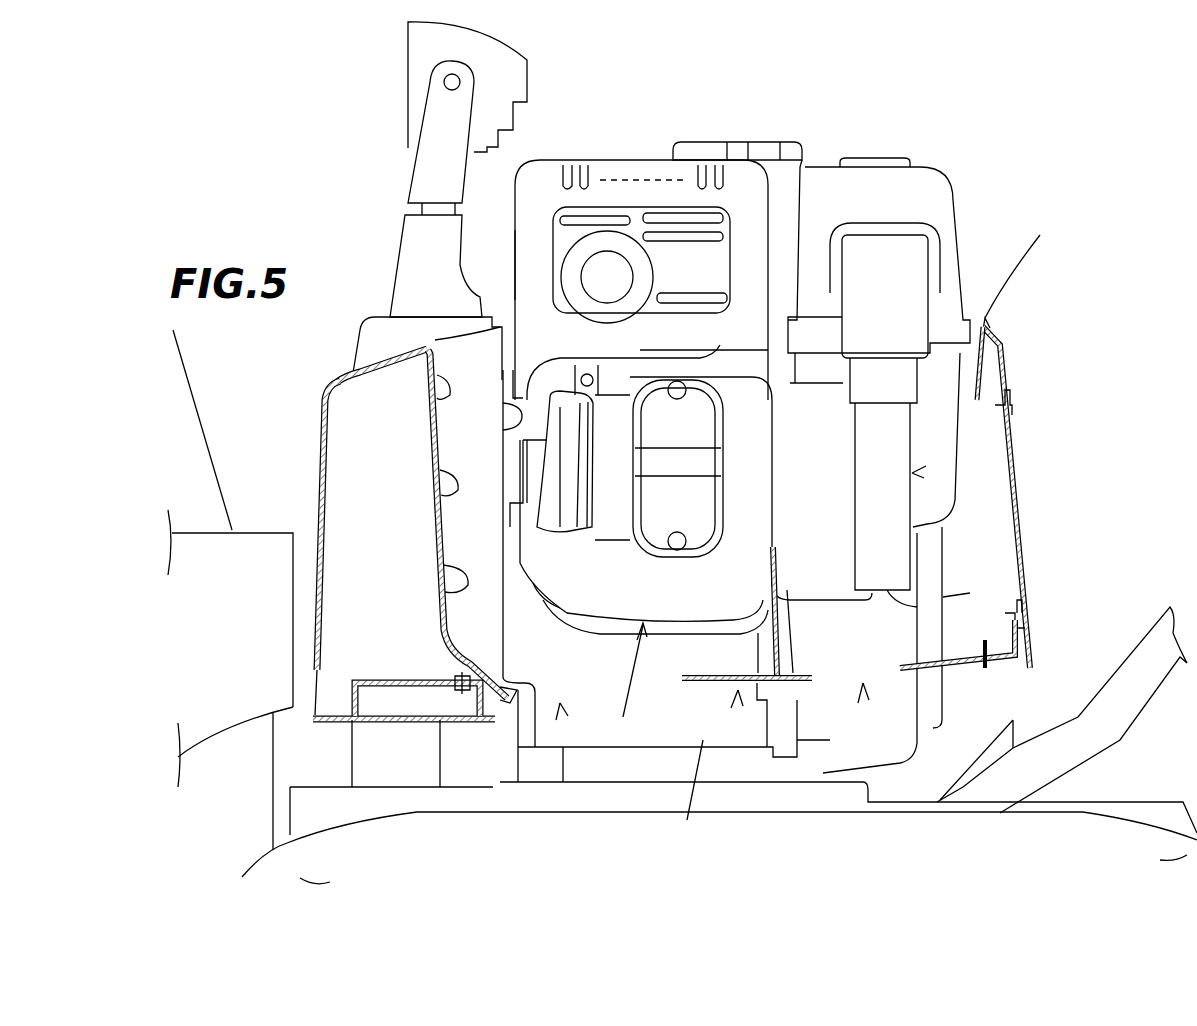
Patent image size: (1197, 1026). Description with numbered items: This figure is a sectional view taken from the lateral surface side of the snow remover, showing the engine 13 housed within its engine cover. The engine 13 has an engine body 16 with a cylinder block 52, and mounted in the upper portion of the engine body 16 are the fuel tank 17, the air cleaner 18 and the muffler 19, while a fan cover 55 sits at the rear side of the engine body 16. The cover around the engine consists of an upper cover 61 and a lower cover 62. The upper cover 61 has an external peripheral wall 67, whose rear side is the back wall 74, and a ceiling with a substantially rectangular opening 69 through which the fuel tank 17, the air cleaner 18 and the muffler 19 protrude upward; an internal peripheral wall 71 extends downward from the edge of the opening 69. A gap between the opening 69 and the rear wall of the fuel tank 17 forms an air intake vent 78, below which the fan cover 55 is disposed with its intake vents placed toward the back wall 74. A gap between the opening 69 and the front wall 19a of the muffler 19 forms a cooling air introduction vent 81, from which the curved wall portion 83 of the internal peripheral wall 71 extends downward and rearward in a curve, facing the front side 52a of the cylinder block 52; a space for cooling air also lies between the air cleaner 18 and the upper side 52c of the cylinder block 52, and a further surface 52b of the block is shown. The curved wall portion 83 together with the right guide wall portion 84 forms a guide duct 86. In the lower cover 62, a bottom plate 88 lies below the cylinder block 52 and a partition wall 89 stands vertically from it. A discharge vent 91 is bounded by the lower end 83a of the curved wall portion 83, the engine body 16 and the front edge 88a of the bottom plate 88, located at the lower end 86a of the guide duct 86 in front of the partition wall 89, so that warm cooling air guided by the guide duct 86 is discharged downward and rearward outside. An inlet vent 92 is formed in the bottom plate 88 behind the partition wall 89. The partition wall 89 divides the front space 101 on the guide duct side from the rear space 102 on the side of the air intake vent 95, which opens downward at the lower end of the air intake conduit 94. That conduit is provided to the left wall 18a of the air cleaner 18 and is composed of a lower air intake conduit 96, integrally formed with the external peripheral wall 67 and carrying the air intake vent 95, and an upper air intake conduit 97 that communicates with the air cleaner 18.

The engine 13 is at (837, 453).
The engine body 16 is at (687, 820).
The fuel tank 17 is at (775, 175).
The air cleaner 18 is at (878, 158).
The left wall 18a is at (930, 195).
The muffler 19 is at (623, 160).
The front wall 19a is at (513, 227).
The cylinder block 52 is at (587, 592).
The front side 52a is at (523, 490).
The cover portion 52b is at (773, 490).
The upper side 52c is at (723, 380).
The fan cover 55 is at (930, 635).
The upper cover 61 is at (375, 360).
The lower cover 62 is at (738, 692).
The external peripheral wall 67 is at (1005, 352).
The opening 69 is at (355, 373).
The internal peripheral wall 71 is at (503, 430).
The back wall 74 is at (1010, 393).
The air intake vent 78 is at (1028, 274).
The cooling air introduction vent 81 is at (435, 338).
The curved wall portion 83 is at (433, 495).
The lower end 83a is at (507, 700).
The right guide wall portion 84 is at (470, 367).
The guide duct 86 is at (443, 597).
The lower end 86a is at (530, 747).
The bottom plate 88 is at (790, 675).
The front edge 88a is at (710, 667).
The partition wall 89 is at (782, 578).
The discharge vent 91 is at (561, 705).
The inlet vent 92 is at (863, 686).
The air intake conduit 94 is at (914, 473).
The air intake vent 95 is at (925, 605).
The lower air intake conduit 96 is at (903, 510).
The upper air intake conduit 97 is at (920, 298).
The front space 101 is at (590, 674).
The rear space 102 is at (873, 655).